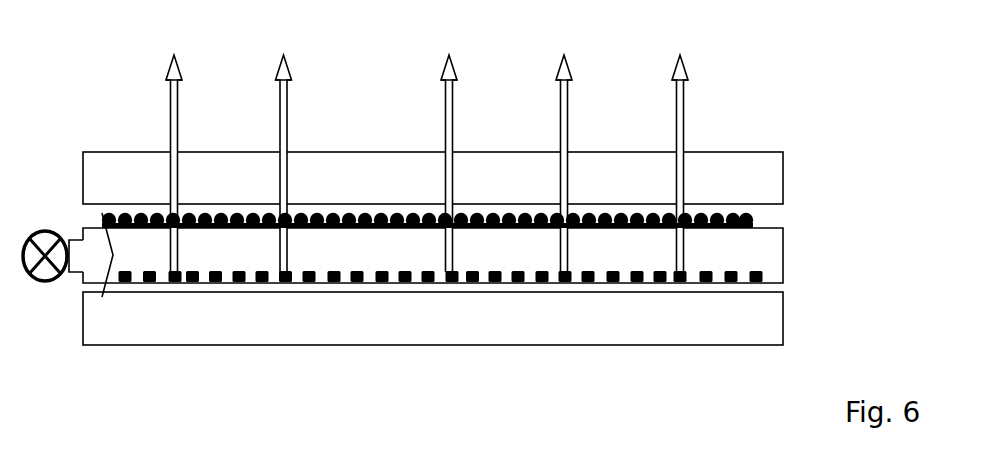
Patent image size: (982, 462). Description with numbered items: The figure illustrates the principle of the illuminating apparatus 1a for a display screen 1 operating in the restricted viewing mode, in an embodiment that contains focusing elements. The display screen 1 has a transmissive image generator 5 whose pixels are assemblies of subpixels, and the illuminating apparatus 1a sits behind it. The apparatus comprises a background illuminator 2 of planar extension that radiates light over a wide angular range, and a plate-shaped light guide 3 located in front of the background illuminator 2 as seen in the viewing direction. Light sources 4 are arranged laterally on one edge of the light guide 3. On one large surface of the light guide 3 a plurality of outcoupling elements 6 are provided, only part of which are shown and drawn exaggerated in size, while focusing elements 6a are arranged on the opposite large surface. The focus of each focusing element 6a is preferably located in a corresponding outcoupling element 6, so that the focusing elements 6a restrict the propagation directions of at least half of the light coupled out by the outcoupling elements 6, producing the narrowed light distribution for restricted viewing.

The display screen 1 is at (848, 167).
The illuminating apparatus 1a is at (797, 230).
The background illuminator 2 is at (433, 318).
The light guide 3 is at (433, 255).
The light source 4 is at (46, 226).
The image generator 5 is at (433, 178).
The outcoupling element 6 is at (192, 283).
The focusing element 6a is at (427, 214).